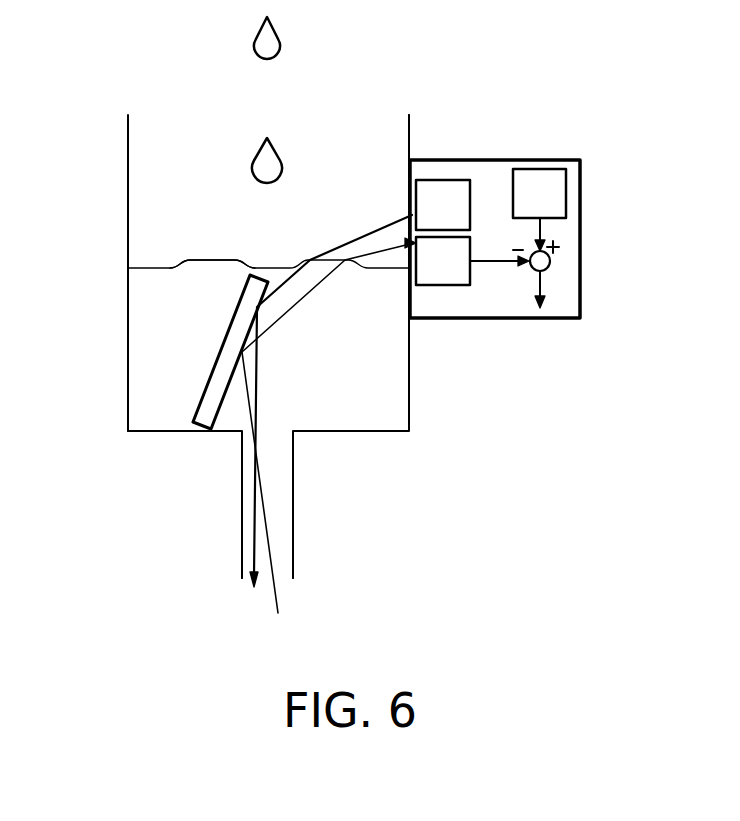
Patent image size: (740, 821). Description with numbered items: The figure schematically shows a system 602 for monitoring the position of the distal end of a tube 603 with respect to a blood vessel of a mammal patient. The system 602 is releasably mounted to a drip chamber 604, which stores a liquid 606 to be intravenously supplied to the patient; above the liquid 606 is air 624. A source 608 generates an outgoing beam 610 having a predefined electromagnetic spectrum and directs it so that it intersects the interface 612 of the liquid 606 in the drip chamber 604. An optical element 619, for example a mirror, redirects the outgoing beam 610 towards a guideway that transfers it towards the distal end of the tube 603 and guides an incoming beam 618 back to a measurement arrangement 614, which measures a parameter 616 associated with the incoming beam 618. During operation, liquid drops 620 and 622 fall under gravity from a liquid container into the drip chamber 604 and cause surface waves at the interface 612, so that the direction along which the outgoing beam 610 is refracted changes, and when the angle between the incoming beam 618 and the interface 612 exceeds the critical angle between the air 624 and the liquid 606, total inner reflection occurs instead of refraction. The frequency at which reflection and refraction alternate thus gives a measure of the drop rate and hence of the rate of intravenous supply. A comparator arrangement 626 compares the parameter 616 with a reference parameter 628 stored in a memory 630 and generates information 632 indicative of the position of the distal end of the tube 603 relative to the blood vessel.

The system 602 is at (88, 133).
The tube 603 is at (293, 473).
The drip chamber 604 is at (128, 255).
The liquid 606 is at (193, 349).
The source 608 is at (462, 218).
The outgoing beam 610 is at (374, 232).
The interface 612 is at (157, 268).
The measurement arrangement 614 is at (462, 275).
The parameter 616 is at (489, 265).
The incoming beam 618 is at (292, 308).
The optical element 619 is at (207, 416).
The liquid drop 620 is at (264, 166).
The liquid drop 622 is at (264, 41).
The air 624 is at (363, 149).
The comparator arrangement 626 is at (550, 255).
The reference parameter 628 is at (543, 229).
The memory 630 is at (557, 207).
The information 632 is at (543, 283).